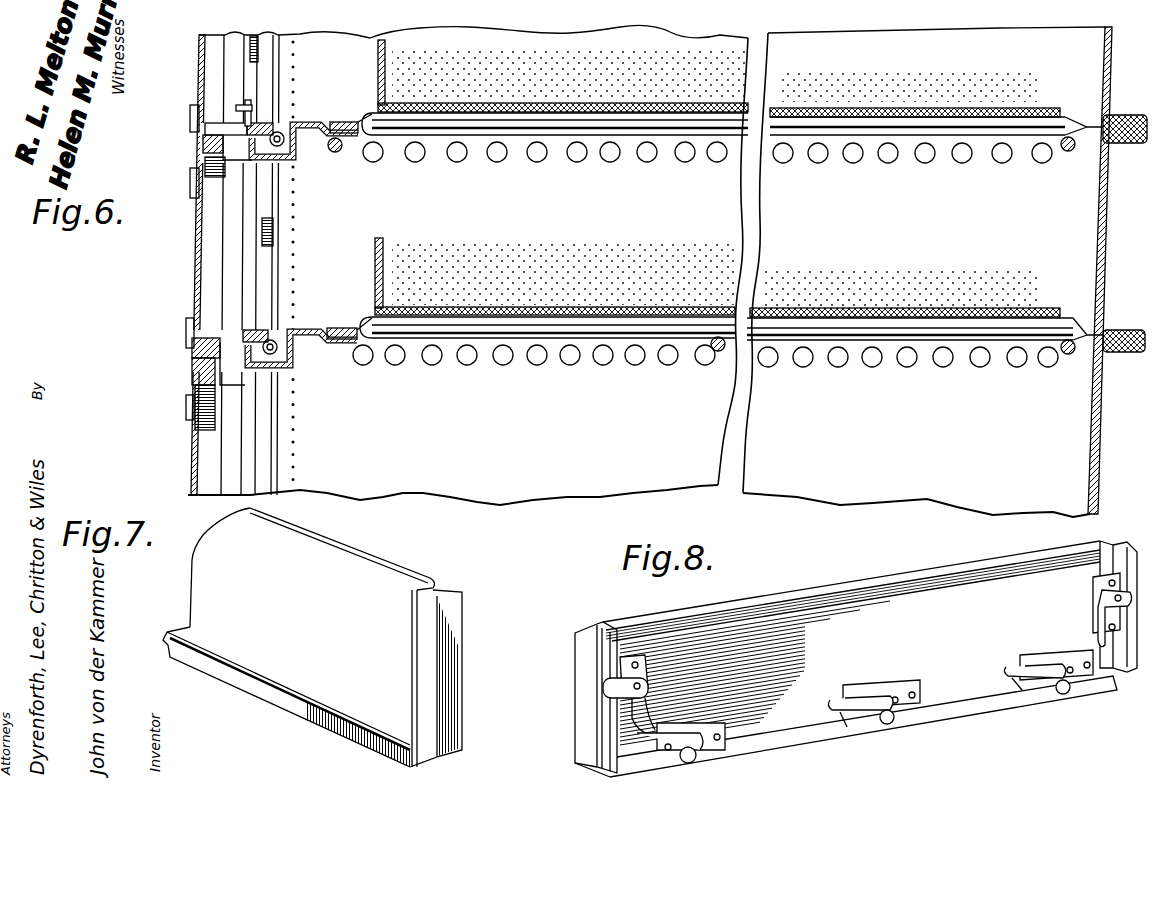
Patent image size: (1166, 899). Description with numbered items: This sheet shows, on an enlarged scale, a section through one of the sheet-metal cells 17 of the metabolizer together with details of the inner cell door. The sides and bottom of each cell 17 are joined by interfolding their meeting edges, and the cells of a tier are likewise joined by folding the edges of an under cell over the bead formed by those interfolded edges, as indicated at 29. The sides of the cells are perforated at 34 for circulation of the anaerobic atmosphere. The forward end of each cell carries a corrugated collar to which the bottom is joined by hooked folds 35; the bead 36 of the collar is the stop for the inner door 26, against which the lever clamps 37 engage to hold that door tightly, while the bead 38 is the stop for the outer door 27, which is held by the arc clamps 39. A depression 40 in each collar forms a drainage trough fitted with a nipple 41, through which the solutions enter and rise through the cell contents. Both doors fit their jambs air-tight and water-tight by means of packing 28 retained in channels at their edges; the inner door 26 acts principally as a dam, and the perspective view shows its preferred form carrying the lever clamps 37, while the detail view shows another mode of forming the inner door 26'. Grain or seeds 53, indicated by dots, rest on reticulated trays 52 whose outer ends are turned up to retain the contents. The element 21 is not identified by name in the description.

In FIG. 6, the cells 17 is at (730, 221).
In FIG. 6, the rivet 21 is at (334, 153).
In FIG. 6, the inner door 26 is at (265, 265).
In FIG. 8, the inner door 26 is at (856, 659).
In FIG. 7, the modified batten strip 26' is at (312, 637).
In FIG. 6, the outer door 27 is at (197, 283).
In FIG. 6, the packing 28 is at (203, 145).
In FIG. 6, the interfolded edges 29 is at (1130, 110).
In FIG. 6, the perforations 34 is at (467, 365).
In FIG. 6, the hooked folds 35 is at (350, 112).
In FIG. 6, the bead 36 is at (205, 129).
In FIG. 6, the lever clamps 37 is at (245, 110).
In FIG. 8, the lever clamps 37 is at (600, 690).
In FIG. 6, the bead 38 is at (225, 342).
In FIG. 6, the arc clamps 39 is at (190, 116).
In FIG. 6, the depression 40 is at (292, 355).
In FIG. 6, the nipple 41 is at (276, 340).
In FIG. 6, the trays 52 is at (375, 248).
In FIG. 6, the contents 53 is at (484, 260).